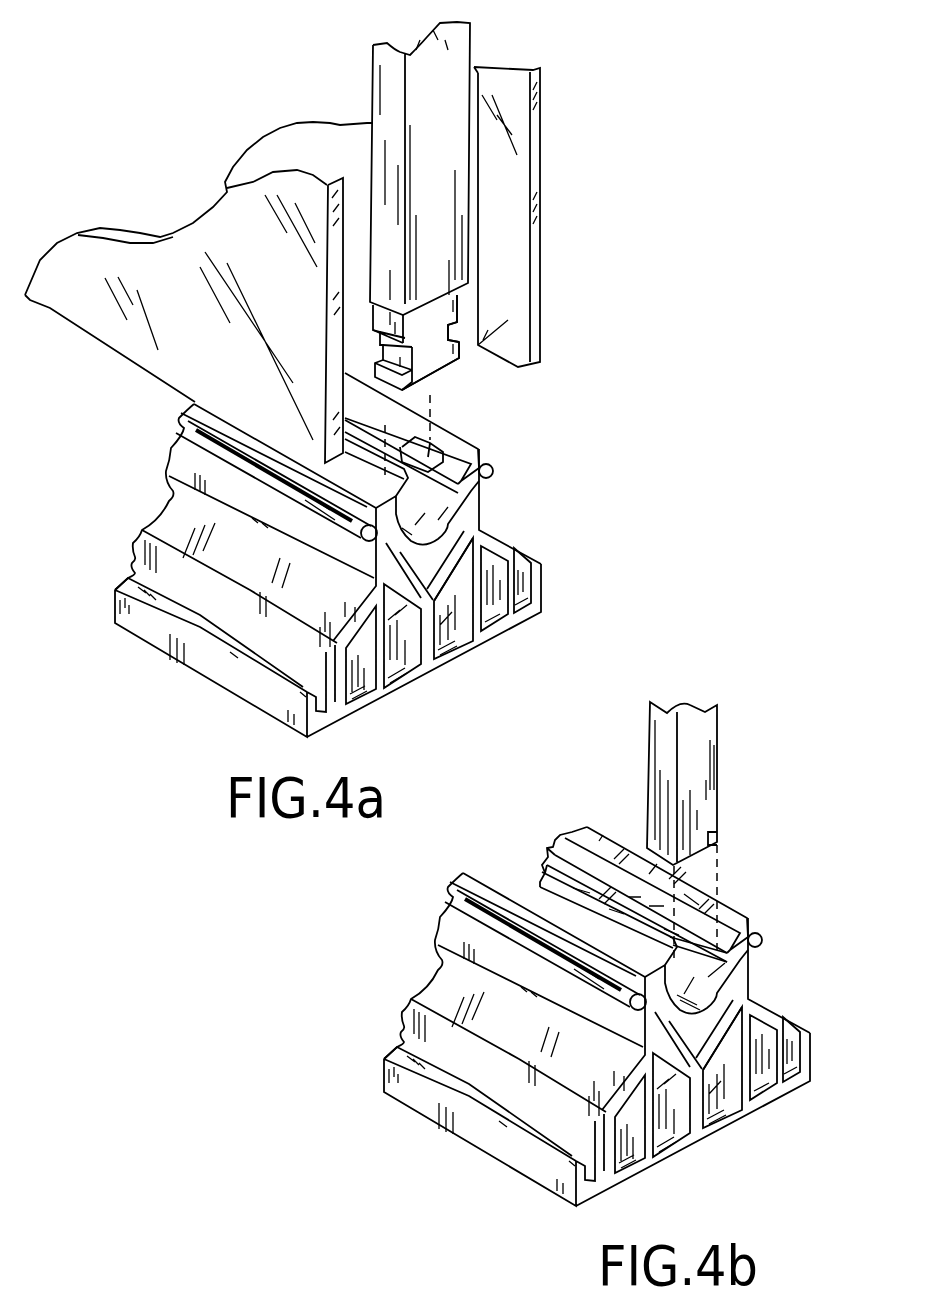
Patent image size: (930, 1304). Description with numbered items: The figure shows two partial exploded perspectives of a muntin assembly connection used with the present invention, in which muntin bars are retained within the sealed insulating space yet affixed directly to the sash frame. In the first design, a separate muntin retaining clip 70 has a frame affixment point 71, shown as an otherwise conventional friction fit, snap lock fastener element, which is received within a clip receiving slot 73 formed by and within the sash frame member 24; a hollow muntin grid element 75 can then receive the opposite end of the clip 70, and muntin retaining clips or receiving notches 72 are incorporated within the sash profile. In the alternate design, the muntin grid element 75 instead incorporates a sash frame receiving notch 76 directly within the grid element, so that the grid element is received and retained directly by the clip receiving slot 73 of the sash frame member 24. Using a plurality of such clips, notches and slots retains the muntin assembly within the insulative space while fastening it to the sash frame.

In FIG. 4a, the sash frame member 24 is at (543, 564).
In FIG. 4b, the sash frame member 24 is at (812, 1033).
In FIG. 4a, the muntin retaining clip 70 is at (468, 356).
In FIG. 4a, the frame affixment point 71 is at (450, 327).
In FIG. 4a, the receiving notches 72 is at (430, 446).
In FIG. 4a, the clip receiving slot 73 is at (462, 492).
In FIG. 4b, the clip receiving slot 73 is at (730, 963).
In FIG. 4a, the muntin grid element 75 is at (382, 173).
In FIG. 4b, the muntin grid element 75 is at (670, 772).
In FIG. 4b, the sash frame receiving notch 76 is at (727, 810).